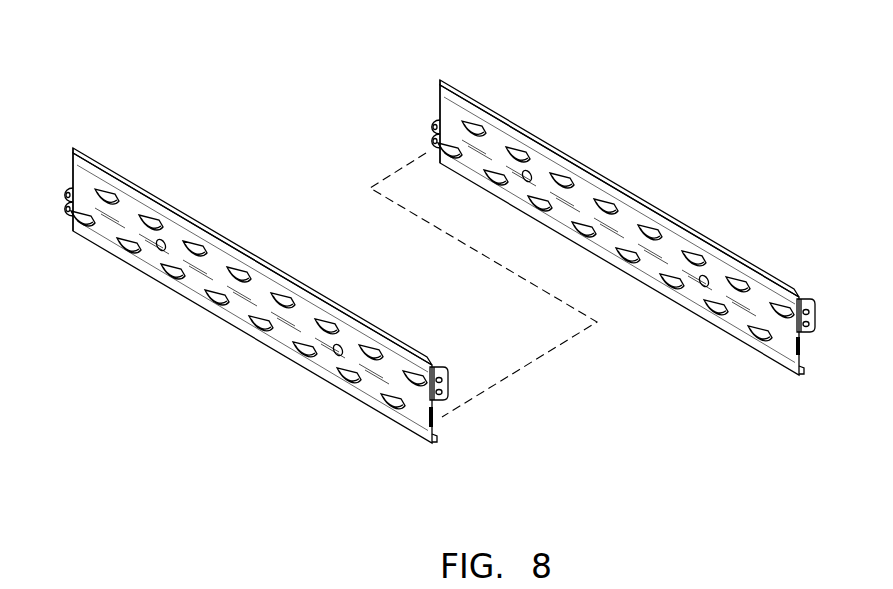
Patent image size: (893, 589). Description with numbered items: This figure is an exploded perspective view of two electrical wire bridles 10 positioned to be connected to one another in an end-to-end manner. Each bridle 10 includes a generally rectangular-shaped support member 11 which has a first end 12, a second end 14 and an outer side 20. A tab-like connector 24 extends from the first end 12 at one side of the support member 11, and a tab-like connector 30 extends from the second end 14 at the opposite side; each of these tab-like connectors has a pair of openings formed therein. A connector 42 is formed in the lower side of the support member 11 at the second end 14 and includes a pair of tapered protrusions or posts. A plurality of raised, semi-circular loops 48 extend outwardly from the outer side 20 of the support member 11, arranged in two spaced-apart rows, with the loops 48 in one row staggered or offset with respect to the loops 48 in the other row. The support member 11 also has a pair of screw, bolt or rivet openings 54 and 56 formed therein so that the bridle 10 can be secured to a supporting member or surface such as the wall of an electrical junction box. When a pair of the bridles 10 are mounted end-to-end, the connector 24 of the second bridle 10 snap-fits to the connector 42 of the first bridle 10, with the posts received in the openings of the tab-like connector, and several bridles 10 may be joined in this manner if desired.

The electrical wire bridle 10 is at (438, 298).
The support member 11 is at (222, 224).
The first end 12 is at (75, 162).
The second end 14 is at (430, 414).
The outer side 20 is at (291, 333).
The tab-like connector 24 is at (63, 219).
The tab-like connector 30 is at (453, 357).
The connector 42 is at (446, 429).
The raised semi-circular loops 48 is at (262, 330).
The screw, bolt or rivet opening 54 is at (158, 256).
The screw, bolt or rivet opening 56 is at (338, 359).